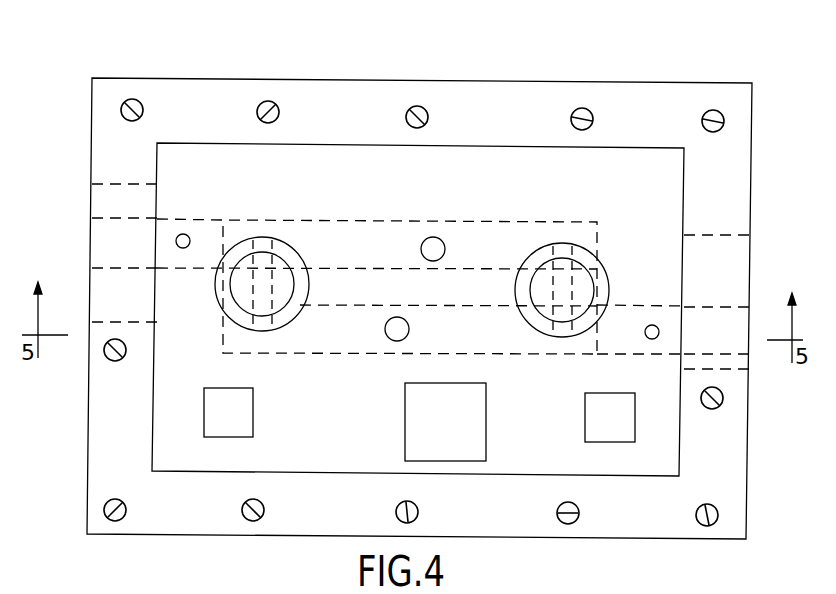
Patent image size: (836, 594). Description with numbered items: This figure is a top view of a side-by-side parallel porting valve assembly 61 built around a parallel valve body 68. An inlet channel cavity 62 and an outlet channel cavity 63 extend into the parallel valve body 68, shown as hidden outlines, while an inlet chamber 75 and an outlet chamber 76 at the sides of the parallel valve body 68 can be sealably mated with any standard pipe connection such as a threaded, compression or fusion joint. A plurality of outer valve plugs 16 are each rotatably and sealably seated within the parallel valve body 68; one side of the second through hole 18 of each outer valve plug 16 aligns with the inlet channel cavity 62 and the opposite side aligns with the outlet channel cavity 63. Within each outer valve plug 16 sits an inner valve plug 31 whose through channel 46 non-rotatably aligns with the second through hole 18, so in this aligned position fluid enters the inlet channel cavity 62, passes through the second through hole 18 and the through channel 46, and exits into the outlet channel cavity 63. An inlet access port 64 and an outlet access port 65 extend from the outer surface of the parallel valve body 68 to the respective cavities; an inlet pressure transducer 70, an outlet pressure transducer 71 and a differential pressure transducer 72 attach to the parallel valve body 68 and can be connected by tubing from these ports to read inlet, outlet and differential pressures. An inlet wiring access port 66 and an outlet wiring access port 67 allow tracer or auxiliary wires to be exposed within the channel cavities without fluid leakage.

The side-by-side parallel porting valve assembly 61 is at (210, 57).
The parallel valve body 68 is at (166, 424).
The inlet chamber 75 is at (100, 204).
The outlet chamber 76 is at (732, 253).
The inlet channel cavity 62 is at (358, 240).
The outlet channel cavity 63 is at (633, 340).
The through channel 46 is at (300, 283).
The second through hole 18 is at (247, 283).
The outer valve plug 16 is at (223, 298).
The inner valve plug 31 is at (240, 280).
The inlet wiring access port 66 is at (184, 233).
The inlet access port 64 is at (436, 240).
The outlet access port 65 is at (396, 337).
The outlet wiring access port 67 is at (660, 332).
The inlet pressure transducer 70 is at (243, 430).
The outlet pressure transducer 71 is at (600, 406).
The differential pressure transducer 72 is at (477, 437).